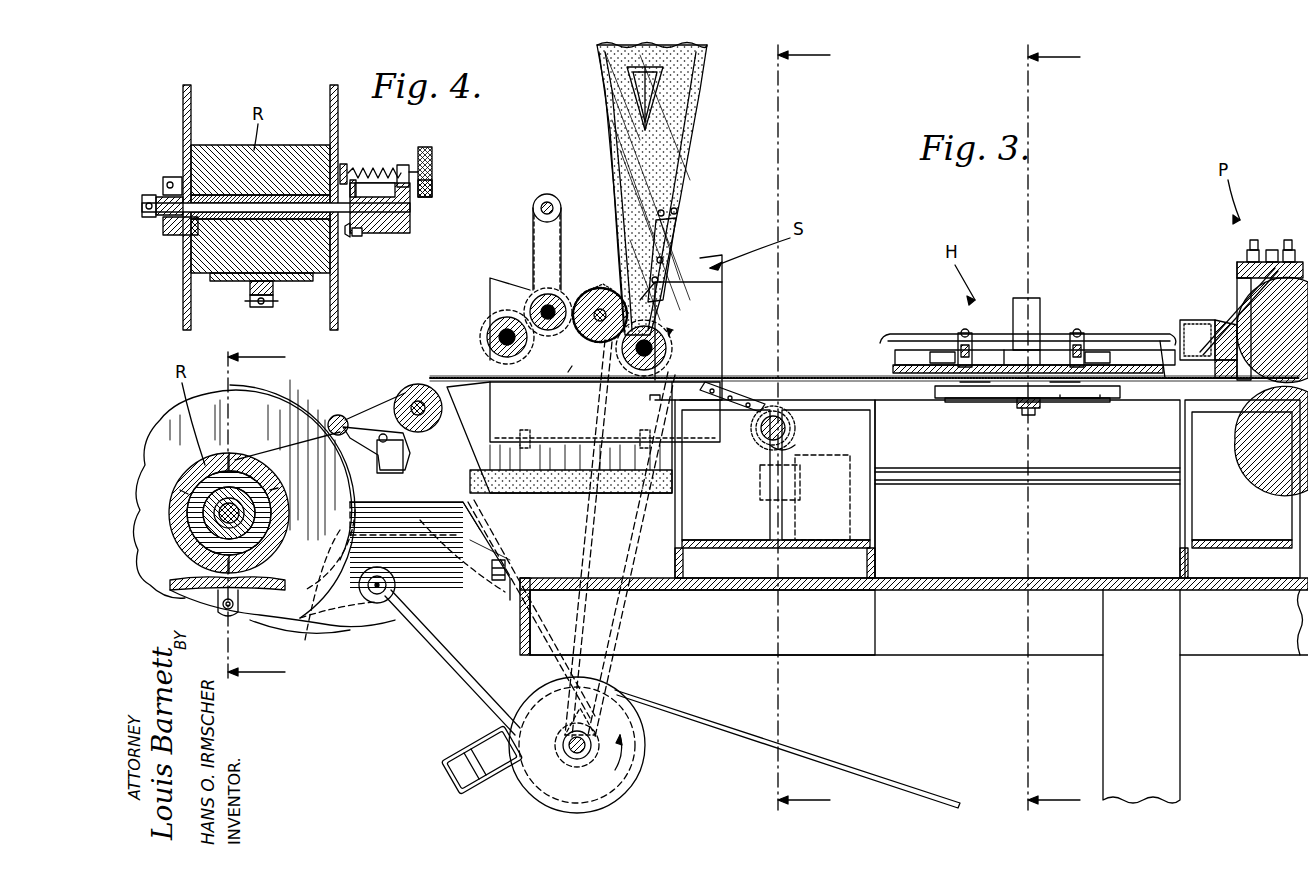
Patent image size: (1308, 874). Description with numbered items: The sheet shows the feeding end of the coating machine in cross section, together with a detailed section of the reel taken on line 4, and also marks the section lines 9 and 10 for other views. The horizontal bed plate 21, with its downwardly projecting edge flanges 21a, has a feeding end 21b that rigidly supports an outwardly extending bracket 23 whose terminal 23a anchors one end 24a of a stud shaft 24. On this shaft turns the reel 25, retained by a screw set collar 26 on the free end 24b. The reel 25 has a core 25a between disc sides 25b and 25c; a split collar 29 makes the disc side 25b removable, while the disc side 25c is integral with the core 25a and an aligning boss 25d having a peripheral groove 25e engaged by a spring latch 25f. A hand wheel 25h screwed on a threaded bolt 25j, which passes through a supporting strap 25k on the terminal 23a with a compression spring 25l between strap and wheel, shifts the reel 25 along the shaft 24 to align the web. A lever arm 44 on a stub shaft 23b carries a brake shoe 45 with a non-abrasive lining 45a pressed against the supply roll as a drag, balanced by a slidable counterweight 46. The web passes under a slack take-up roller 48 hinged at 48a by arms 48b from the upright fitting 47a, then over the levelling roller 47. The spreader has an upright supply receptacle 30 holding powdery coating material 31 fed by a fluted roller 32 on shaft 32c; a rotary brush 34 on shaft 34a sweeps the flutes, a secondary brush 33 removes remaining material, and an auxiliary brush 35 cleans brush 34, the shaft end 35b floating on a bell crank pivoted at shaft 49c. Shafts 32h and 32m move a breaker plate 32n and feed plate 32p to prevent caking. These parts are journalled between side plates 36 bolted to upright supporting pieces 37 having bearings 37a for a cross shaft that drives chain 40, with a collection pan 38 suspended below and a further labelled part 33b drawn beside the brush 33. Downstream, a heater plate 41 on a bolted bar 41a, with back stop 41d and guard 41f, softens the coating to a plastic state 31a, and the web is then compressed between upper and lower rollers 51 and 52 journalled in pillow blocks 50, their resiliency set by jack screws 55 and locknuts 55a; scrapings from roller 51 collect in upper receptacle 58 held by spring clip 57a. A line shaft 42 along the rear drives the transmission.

In FIG. 3, the bed plate 21 is at (975, 578).
In FIG. 3, the edge flanges 21a is at (962, 648).
In FIG. 3, the feeding end of the bed plate 21b is at (530, 598).
In FIG. 3, the bracket 23 is at (470, 600).
In FIG. 4, the bracket terminal 23a is at (398, 222).
In FIG. 3, the bracket terminal 23a is at (240, 500).
In FIG. 3, the stub shaft 23b is at (377, 605).
In FIG. 4, the stud shaft 24 is at (212, 218).
In FIG. 3, the stud shaft 24 is at (248, 500).
In FIG. 4, the shaft end 24a is at (410, 208).
In FIG. 4, the free end of the shaft 24b is at (142, 212).
In FIG. 4, the reel 25 is at (345, 108).
In FIG. 3, the reel 25 is at (155, 420).
In FIG. 4, the core 25a is at (302, 196).
In FIG. 3, the core 25a is at (200, 480).
In FIG. 4, the disc side 25b is at (188, 92).
In FIG. 4, the disc side 25c is at (330, 100).
In FIG. 4, the aligning boss 25d is at (365, 245).
In FIG. 4, the peripheral groove 25e is at (347, 238).
In FIG. 4, the spring latch 25f is at (345, 164).
In FIG. 4, the hand wheel 25h is at (432, 150).
In FIG. 4, the threaded bolt 25j is at (378, 168).
In FIG. 4, the supporting strap 25k is at (432, 178).
In FIG. 4, the compression spring 25l is at (405, 165).
In FIG. 4, the screw set collar 26 is at (145, 193).
In FIG. 4, the split collar 29 is at (170, 175).
In FIG. 3, the supply receptacle 30 is at (680, 170).
In FIG. 3, the coating material 31 is at (686, 140).
In FIG. 3, the coating material in plastic state 31a is at (1160, 338).
In FIG. 3, the fluted-faced roller 32 is at (589, 274).
In FIG. 3, the roller shaft 32c is at (605, 415).
In FIG. 3, the shaft 32h is at (676, 206).
In FIG. 3, the crank shaft 32m is at (650, 140).
In FIG. 3, the breaker plate 32n is at (655, 90).
In FIG. 3, the feed plate 32p is at (655, 245).
In FIG. 3, the secondary rotary brush 33 is at (668, 345).
In FIG. 3, the block 33b is at (722, 282).
In FIG. 3, the rotary brush 34 is at (530, 300).
In FIG. 3, the brush shaft 34a is at (555, 285).
In FIG. 3, the auxiliary rotary brush 35 is at (500, 326).
In FIG. 3, the brush shaft end 35b is at (488, 340).
In FIG. 3, the side plates 36 is at (706, 310).
In FIG. 3, the upright supporting pieces 37 is at (720, 525).
In FIG. 3, the bearings 37a is at (768, 447).
In FIG. 3, the collection pan 38 is at (552, 495).
In FIG. 3, the chain 40 is at (755, 400).
In FIG. 3, the heater plate 41 is at (762, 494).
In FIG. 3, the bolted bar 41a is at (988, 400).
In FIG. 3, the back stop 41d is at (1030, 300).
In FIG. 3, the guard or shield 41f is at (920, 336).
In FIG. 3, the line shaft 42 is at (1070, 488).
In FIG. 3, the lever arm 44 is at (360, 620).
In FIG. 4, the brake shoe 45 is at (294, 282).
In FIG. 3, the brake shoe 45 is at (210, 600).
In FIG. 4, the non-abrasive lining 45a is at (250, 290).
In FIG. 3, the non-abrasive lining 45a is at (172, 570).
In FIG. 3, the counterweight 46 is at (470, 760).
In FIG. 3, the levelling roller 47 is at (410, 395).
In FIG. 3, the upright fitting 47a is at (386, 462).
In FIG. 3, the slack take-up roller 48 is at (338, 415).
In FIG. 3, the hinge 48a is at (418, 384).
In FIG. 3, the arms 48b is at (342, 415).
In FIG. 3, the pivot shaft 49c is at (547, 200).
In FIG. 3, the pillow blocks 50 is at (1180, 525).
In FIG. 3, the upper roller 51 is at (1255, 300).
In FIG. 3, the lower roller 52 is at (1240, 436).
In FIG. 3, the jack screws 55 is at (1275, 240).
In FIG. 3, the locknuts 55a is at (1242, 262).
In FIG. 3, the spring clip 57a is at (1225, 320).
In FIG. 3, the upper receptacle 58 is at (1192, 320).
In FIG. 3, the section line 4— 4 is at (263, 515).
In FIG. 3, the section line 9— 9 is at (810, 428).
In FIG. 3, the section line 10— 10 is at (1066, 428).